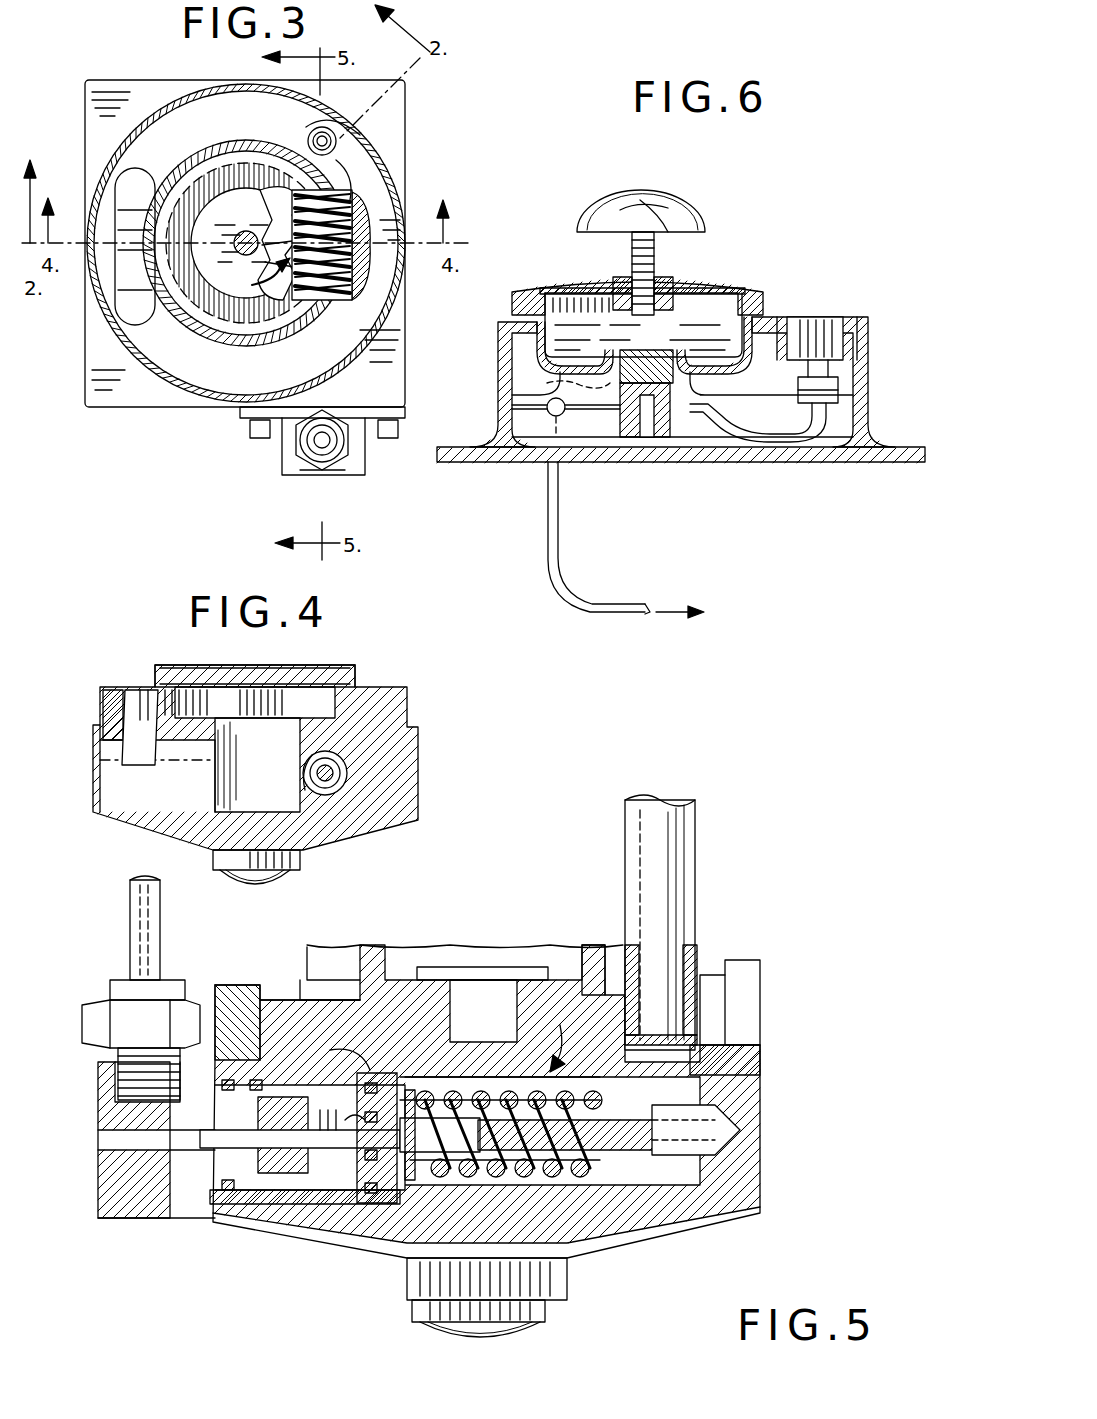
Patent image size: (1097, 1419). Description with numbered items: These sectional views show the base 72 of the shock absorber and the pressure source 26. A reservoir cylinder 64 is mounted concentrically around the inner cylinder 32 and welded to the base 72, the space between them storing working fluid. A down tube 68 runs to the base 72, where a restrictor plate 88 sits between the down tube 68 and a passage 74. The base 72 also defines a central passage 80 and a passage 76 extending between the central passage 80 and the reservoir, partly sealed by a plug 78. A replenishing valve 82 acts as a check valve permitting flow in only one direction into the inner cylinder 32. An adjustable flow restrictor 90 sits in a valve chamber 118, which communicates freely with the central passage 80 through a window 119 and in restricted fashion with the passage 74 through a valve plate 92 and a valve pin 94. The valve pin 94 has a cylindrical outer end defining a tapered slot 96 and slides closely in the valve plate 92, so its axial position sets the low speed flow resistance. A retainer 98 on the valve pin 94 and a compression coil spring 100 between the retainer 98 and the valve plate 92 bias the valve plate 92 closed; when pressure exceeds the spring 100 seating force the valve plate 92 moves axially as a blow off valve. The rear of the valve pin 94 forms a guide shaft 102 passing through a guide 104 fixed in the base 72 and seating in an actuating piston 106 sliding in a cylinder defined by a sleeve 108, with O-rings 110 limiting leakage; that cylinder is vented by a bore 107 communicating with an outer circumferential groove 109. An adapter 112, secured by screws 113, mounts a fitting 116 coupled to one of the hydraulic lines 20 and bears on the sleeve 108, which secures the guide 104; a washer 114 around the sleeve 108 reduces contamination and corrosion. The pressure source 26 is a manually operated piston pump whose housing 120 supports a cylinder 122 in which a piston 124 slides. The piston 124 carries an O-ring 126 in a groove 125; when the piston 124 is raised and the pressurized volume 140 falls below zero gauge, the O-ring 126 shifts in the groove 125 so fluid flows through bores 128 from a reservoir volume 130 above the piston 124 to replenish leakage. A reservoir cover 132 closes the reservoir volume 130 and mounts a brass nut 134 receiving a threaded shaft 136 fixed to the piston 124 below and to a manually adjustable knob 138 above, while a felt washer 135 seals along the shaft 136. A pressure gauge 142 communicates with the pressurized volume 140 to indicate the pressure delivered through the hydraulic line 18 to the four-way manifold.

In FIG. 6, the hydraulic line 18 is at (560, 512).
In FIG. 3, the hydraulic lines 20 is at (346, 468).
In FIG. 5, the hydraulic lines 20 is at (152, 935).
In FIG. 6, the pressure source 26 is at (535, 278).
In FIG. 3, the inner cylinder 32 is at (180, 158).
In FIG. 5, the inner cylinder 32 is at (596, 975).
In FIG. 3, the reservoir cylinder 64 is at (135, 370).
In FIG. 5, the reservoir cylinder 64 is at (766, 985).
In FIG. 5, the down tube 68 is at (690, 848).
In FIG. 3, the base 72 is at (122, 88).
In FIG. 4, the base 72 is at (392, 820).
In FIG. 5, the base 72 is at (752, 1178).
In FIG. 3, the passage 74 is at (336, 135).
In FIG. 5, the passage 74 is at (730, 1062).
In FIG. 3, the passage 76 is at (130, 215).
In FIG. 4, the passage 76 is at (122, 700).
In FIG. 4, the plug 78 is at (97, 768).
In FIG. 4, the central passage 80 is at (270, 761).
In FIG. 3, the replenishing valve 82 is at (240, 205).
In FIG. 3, the restrictor plate 88 is at (345, 152).
In FIG. 5, the restrictor plate 88 is at (697, 960).
In FIG. 3, the adjustable flow restrictor 90 is at (232, 300).
In FIG. 5, the adjustable flow restrictor 90 is at (530, 1060).
In FIG. 5, the valve plate 92 is at (560, 1152).
In FIG. 4, the valve pin 94 is at (328, 795).
In FIG. 5, the valve pin 94 is at (545, 1170).
In FIG. 5, the tapered slot 96 is at (728, 1105).
In FIG. 5, the retainer 98 is at (430, 1088).
In FIG. 3, the compression coil spring 100 is at (360, 195).
In FIG. 4, the compression coil spring 100 is at (338, 762).
In FIG. 5, the compression coil spring 100 is at (480, 1160).
In FIG. 5, the guide shaft 102 is at (310, 1150).
In FIG. 5, the guide 104 is at (302, 1030).
In FIG. 5, the actuating piston 106 is at (240, 1010).
In FIG. 5, the bore 107 is at (325, 1205).
In FIG. 5, the sleeve 108 is at (252, 1205).
In FIG. 5, the outer circumferential groove 109 is at (448, 1040).
In FIG. 5, the O-rings 110 is at (240, 1080).
In FIG. 3, the adapter 112 is at (288, 455).
In FIG. 5, the adapter 112 is at (110, 1212).
In FIG. 3, the screws 113 is at (258, 435).
In FIG. 3, the washer 114 is at (245, 414).
In FIG. 5, the washer 114 is at (212, 1222).
In FIG. 3, the fitting 116 is at (305, 472).
In FIG. 5, the fitting 116 is at (118, 1012).
In FIG. 3, the valve chamber 118 is at (358, 262).
In FIG. 4, the valve chamber 118 is at (348, 778).
In FIG. 5, the valve chamber 118 is at (490, 1185).
In FIG. 3, the window 119 is at (282, 200).
In FIG. 4, the window 119 is at (298, 740).
In FIG. 5, the window 119 is at (447, 1250).
In FIG. 6, the housing 120 is at (720, 465).
In FIG. 6, the cylinder 122 is at (548, 385).
In FIG. 6, the piston 124 is at (545, 345).
In FIG. 6, the groove 125 is at (728, 345).
In FIG. 6, the O-ring 126 is at (680, 370).
In FIG. 6, the bores 128 is at (655, 440).
In FIG. 6, the reservoir volume 130 is at (700, 322).
In FIG. 6, the reservoir cover 132 is at (748, 288).
In FIG. 6, the brass nut 134 is at (605, 290).
In FIG. 6, the felt washer 135 is at (690, 228).
In FIG. 6, the threaded shaft 136 is at (641, 232).
In FIG. 6, the manually adjustable knob 138 is at (680, 195).
In FIG. 6, the pressurized volume 140 is at (645, 400).
In FIG. 6, the pressure gauge 142 is at (818, 318).